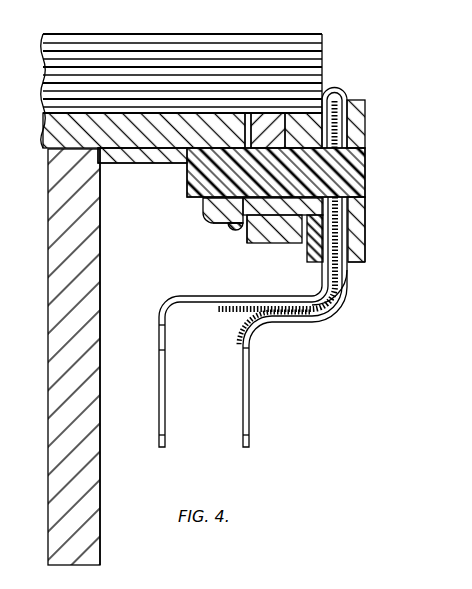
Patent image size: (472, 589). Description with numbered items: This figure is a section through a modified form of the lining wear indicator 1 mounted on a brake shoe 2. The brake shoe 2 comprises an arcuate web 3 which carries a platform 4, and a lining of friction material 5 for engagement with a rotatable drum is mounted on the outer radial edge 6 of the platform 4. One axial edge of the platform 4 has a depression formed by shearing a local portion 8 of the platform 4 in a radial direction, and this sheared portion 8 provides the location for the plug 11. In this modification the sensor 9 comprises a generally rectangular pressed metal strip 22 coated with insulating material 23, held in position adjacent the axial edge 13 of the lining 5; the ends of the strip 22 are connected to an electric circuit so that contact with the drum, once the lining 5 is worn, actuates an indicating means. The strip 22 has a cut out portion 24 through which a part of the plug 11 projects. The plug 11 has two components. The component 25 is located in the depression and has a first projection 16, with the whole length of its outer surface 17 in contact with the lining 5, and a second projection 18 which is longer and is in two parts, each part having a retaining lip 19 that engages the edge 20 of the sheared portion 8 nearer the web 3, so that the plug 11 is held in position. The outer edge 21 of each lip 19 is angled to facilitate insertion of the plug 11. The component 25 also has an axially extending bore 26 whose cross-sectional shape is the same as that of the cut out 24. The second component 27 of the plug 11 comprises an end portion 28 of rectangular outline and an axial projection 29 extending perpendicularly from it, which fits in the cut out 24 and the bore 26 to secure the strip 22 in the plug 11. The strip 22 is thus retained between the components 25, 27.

The lining wear indicator 1 is at (372, 163).
The brake shoe 2 is at (100, 355).
The arcuate web 3 is at (90, 413).
The platform 4 is at (134, 150).
The lining of friction material 5 is at (192, 38).
The outer radial edge 6 is at (105, 117).
The sheared portion 8 is at (300, 240).
The sensor 9 is at (346, 90).
The plug 11 is at (367, 218).
The axial edge 13 is at (323, 44).
The first projection 16 is at (300, 128).
The outer surface 17 is at (267, 112).
The second projection 18 is at (232, 230).
The retaining lip 19 is at (240, 226).
The edge 20 is at (248, 223).
The outer edge 21 is at (228, 224).
The pressed metal strip 22 is at (343, 313).
The insulating material 23 is at (312, 318).
The cut out portion 24 is at (364, 151).
The component 25 is at (322, 262).
The axially extending bore 26 is at (332, 197).
The second component 27 is at (367, 241).
The end portion 28 is at (357, 251).
The axial projection 29 is at (200, 178).